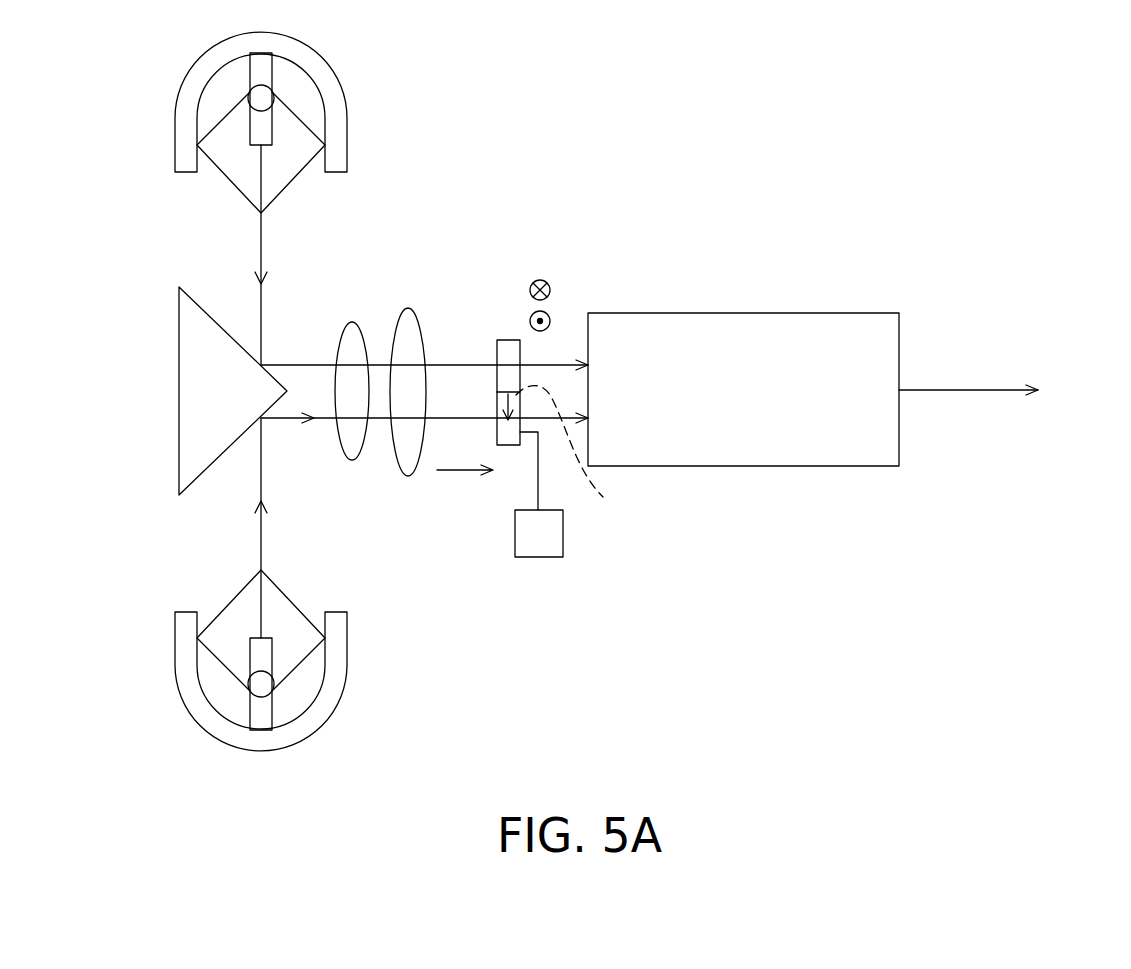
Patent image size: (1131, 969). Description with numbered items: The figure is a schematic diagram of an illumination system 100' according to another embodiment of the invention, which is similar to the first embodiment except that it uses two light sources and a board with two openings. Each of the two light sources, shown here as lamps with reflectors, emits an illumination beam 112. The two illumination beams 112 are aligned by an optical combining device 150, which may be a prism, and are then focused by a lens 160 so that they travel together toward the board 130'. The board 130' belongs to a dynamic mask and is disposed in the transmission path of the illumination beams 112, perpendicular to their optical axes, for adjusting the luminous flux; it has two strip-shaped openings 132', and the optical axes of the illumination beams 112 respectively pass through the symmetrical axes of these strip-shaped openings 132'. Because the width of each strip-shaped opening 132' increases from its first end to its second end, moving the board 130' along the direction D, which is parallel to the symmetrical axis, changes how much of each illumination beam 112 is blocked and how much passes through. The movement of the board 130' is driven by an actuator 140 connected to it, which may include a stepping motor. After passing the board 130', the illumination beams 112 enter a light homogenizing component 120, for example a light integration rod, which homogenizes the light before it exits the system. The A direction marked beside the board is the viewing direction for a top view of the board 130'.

The illumination system 100' is at (1063, 706).
The illumination beam 112 is at (305, 363).
The light homogenizing component 120 is at (771, 333).
The board 130' is at (488, 337).
The strip-shaped opening 132' is at (582, 449).
The actuator 140 is at (540, 538).
The optical combining device 150 is at (213, 398).
The lens 160 is at (408, 308).
The A direction A is at (460, 473).
The direction D is at (551, 320).